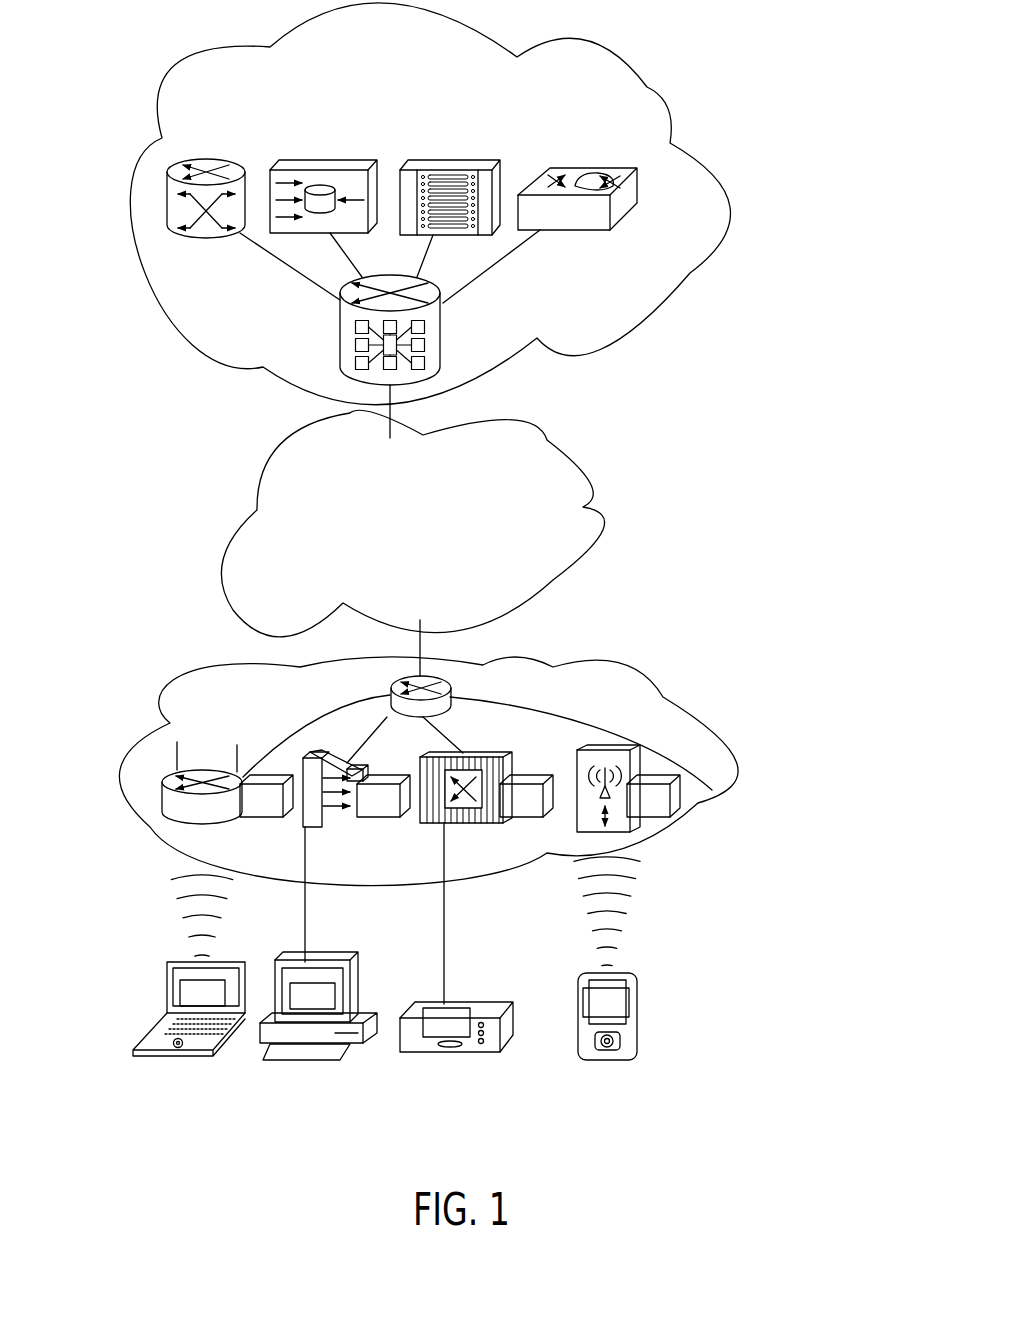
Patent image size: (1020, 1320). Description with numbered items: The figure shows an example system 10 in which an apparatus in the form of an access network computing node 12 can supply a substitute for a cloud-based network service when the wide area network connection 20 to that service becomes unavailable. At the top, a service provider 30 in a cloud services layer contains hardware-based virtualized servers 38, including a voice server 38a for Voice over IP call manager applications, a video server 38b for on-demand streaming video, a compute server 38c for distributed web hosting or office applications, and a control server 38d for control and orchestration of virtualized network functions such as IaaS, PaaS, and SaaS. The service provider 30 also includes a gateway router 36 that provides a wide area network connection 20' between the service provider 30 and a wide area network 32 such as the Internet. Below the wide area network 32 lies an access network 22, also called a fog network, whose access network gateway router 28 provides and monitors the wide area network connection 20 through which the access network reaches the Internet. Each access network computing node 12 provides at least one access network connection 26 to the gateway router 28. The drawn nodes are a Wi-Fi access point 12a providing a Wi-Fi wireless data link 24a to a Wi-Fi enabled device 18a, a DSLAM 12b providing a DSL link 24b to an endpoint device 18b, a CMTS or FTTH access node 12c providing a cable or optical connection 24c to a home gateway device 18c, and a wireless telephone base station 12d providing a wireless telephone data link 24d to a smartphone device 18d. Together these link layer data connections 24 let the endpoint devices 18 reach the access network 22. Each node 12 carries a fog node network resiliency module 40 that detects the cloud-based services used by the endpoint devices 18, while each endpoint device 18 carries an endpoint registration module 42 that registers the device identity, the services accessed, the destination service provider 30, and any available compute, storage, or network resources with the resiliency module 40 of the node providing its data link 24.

The system 10 is at (137, 440).
The service provider 30 is at (647, 88).
The virtualized servers 38 is at (706, 199).
The voice server 38a is at (205, 157).
The video server 38b is at (320, 157).
The compute server 38c is at (450, 160).
The control server 38d is at (580, 167).
The gateway router 36 is at (445, 332).
The wide area network connection 20' is at (458, 409).
The wide area network 32 is at (582, 536).
The wide area network connection 20 is at (446, 648).
The access network 22 is at (665, 698).
The access network gateway router 28 is at (390, 680).
The access network connection 26 is at (343, 705).
The access network computing node 12 is at (704, 789).
The Wi-Fi access point 12a is at (163, 804).
The digital subscriber line access multiplexer 12b is at (303, 753).
The cable modem termination system 12c is at (492, 753).
The wireless telephone base station 12d is at (610, 747).
The fog node network resiliency module 40 is at (257, 822).
The link layer data connection 24 is at (660, 914).
The Wi-Fi wireless data link 24a is at (180, 907).
The DSL link 24b is at (303, 927).
The cable connection 24c is at (443, 927).
The wireless telephone data link 24d is at (600, 930).
The endpoint device 18 is at (660, 1011).
The Wi-Fi enabled device 18a is at (157, 1053).
The endpoint device 18b is at (293, 1060).
The home gateway device 18c is at (427, 1052).
The smartphone device 18d is at (597, 1060).
The endpoint registration module 42 is at (180, 988).